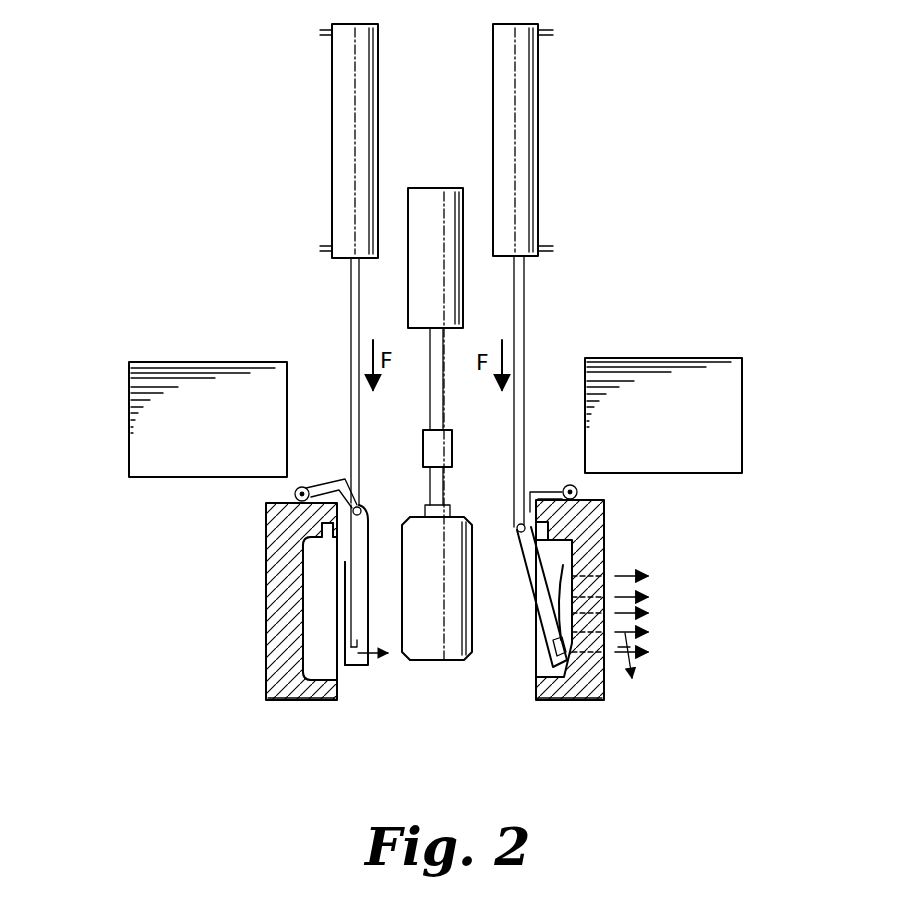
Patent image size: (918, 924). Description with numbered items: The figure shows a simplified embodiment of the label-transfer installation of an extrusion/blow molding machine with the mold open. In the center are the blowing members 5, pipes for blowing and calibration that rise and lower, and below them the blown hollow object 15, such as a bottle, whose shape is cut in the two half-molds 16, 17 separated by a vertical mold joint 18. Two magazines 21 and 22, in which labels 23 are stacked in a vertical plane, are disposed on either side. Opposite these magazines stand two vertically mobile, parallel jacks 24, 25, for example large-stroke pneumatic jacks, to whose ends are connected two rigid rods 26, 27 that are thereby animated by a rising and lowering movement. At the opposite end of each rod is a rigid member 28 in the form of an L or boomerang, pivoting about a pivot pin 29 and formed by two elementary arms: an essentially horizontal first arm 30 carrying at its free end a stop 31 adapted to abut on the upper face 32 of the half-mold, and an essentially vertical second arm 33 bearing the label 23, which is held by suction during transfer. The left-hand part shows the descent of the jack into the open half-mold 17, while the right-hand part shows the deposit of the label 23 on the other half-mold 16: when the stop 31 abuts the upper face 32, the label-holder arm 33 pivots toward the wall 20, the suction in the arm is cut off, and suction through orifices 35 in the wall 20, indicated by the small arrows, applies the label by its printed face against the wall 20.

The blowing members 5 is at (440, 205).
The blown hollow object 15 is at (443, 650).
The half-mold 16 is at (585, 690).
The half-mold 17 is at (283, 688).
The vertical mold joint 18 is at (341, 690).
The wall of the half-mold 20 is at (307, 591).
The magazine 21 is at (155, 382).
The magazine 22 is at (658, 368).
The label 23 is at (589, 604).
The jack 24 is at (345, 150).
The jack 25 is at (527, 178).
The rigid rod 26 is at (352, 292).
The rigid rod 27 is at (522, 300).
The pivoting rigid member 28 is at (376, 538).
The pivot pin 29 is at (362, 505).
The first elementary arm 30 is at (333, 487).
The stop 31 is at (295, 493).
The upper face of the half-mold 32 is at (302, 487).
The second elementary arm 33 is at (361, 595).
The orifices 35 is at (592, 603).